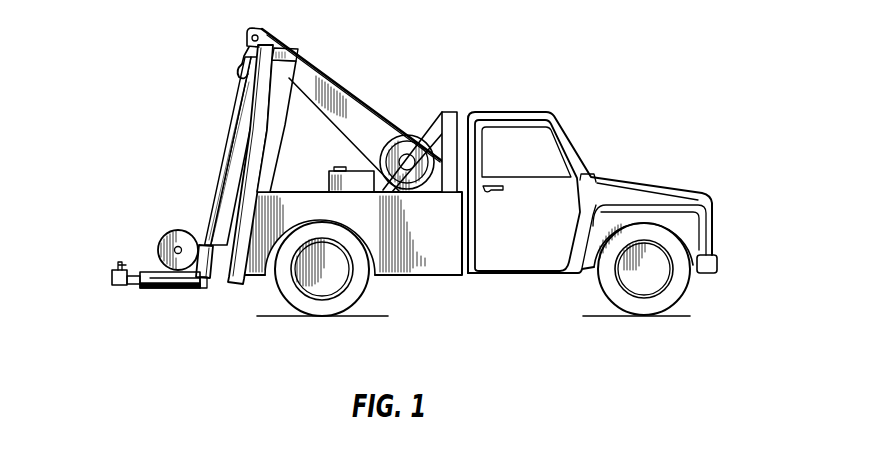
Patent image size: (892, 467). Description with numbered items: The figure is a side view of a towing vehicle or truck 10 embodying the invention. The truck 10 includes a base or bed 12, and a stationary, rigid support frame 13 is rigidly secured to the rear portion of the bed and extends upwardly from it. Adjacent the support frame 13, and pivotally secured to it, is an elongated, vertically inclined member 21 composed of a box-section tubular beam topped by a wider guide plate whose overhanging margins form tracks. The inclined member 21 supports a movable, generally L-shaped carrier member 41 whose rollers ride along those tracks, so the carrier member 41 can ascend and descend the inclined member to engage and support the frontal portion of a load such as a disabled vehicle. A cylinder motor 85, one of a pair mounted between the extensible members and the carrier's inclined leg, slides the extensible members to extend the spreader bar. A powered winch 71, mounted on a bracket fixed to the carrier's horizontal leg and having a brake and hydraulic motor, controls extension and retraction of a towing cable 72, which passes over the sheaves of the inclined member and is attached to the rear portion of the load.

The towing vehicle 10 is at (641, 138).
The bed 12 is at (410, 278).
The support frame 13 is at (288, 82).
The inclined member 21 is at (252, 110).
The towing cable 72 is at (214, 193).
The powered winch 71 is at (178, 230).
The carrier member 41 is at (147, 232).
The cylinder motor 85 is at (163, 289).